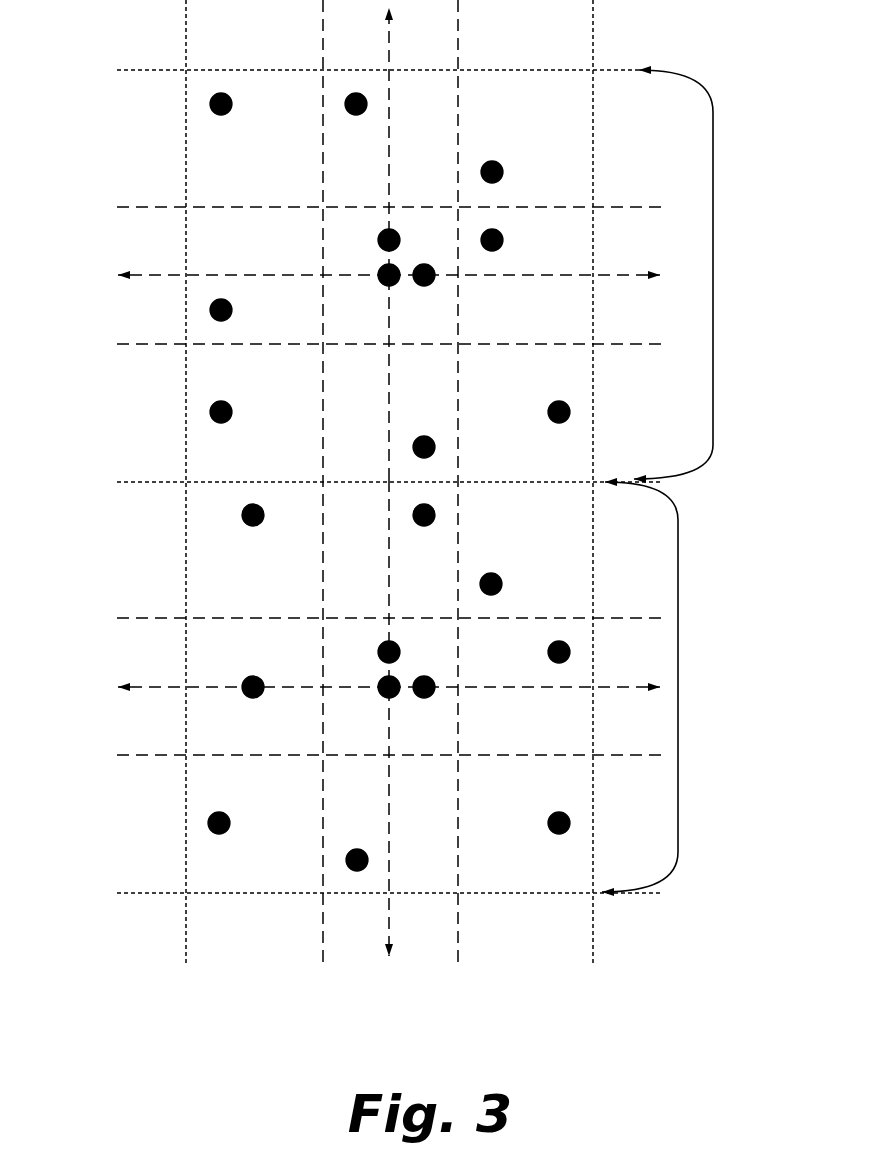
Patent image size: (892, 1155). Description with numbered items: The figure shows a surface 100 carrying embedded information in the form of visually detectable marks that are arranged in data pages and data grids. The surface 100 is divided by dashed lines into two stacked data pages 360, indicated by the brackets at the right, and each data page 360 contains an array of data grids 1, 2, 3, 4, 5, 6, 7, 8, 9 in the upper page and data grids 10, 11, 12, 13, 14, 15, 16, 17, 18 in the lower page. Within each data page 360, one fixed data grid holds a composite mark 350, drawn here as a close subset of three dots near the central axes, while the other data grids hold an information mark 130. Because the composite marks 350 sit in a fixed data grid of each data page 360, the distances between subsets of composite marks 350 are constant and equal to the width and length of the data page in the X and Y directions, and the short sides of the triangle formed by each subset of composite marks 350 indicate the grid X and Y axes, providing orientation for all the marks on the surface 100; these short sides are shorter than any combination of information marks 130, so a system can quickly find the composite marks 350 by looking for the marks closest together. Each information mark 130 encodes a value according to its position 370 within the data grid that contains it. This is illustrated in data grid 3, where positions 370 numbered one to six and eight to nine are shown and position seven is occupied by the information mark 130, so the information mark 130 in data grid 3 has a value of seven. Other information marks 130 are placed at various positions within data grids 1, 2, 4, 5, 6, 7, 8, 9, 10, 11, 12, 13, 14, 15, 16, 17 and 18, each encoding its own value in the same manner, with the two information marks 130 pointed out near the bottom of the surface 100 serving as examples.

The surface 100 is at (88, 561).
The information mark 130 is at (229, 840).
The composite mark 350 is at (399, 666).
The data page 360 is at (713, 275).
The position 370 is at (501, 80).
The data grid 1 is at (248, 149).
The data grid 2 is at (349, 152).
The data grid 3 is at (574, 199).
The data grid 4 is at (248, 248).
The data grid 5 is at (345, 246).
The data grid 6 is at (518, 251).
The data grid 7 is at (248, 423).
The data grid 8 is at (415, 424).
The data grid 9 is at (520, 424).
The data grid 10 is at (242, 561).
The data grid 11 is at (409, 563).
The data grid 12 is at (512, 563).
The data grid 13 is at (240, 666).
The data grid 14 is at (344, 733).
The data grid 15 is at (512, 663).
The data grid 16 is at (240, 834).
The data grid 17 is at (412, 838).
The data grid 18 is at (512, 834).